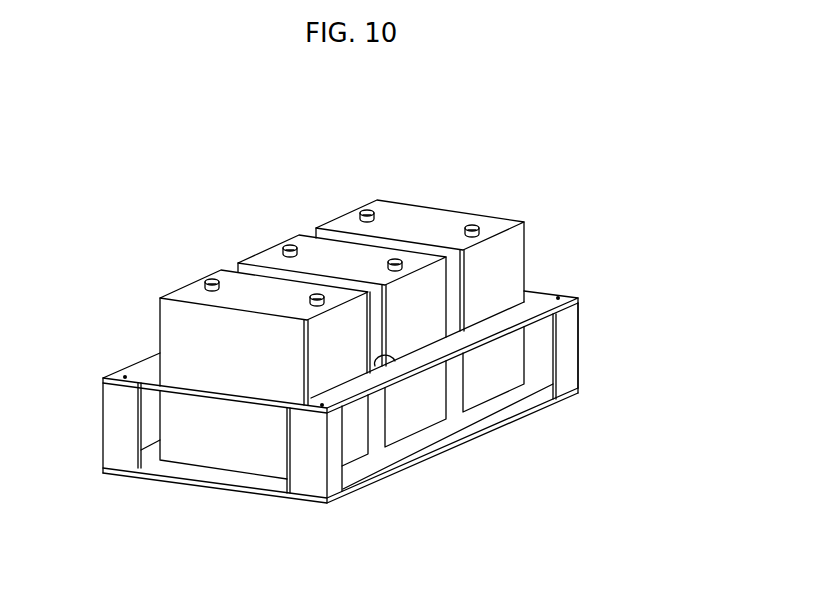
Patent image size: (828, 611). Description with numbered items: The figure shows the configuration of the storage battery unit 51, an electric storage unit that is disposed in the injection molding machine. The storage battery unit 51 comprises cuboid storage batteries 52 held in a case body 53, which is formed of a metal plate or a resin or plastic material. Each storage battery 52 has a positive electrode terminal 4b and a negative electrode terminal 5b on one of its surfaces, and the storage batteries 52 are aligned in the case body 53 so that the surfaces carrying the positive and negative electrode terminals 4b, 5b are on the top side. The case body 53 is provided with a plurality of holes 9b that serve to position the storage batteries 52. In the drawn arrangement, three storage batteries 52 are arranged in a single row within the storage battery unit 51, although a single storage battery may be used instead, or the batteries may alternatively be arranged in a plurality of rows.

The storage battery unit 51 is at (427, 468).
The storage battery 52 is at (457, 283).
The case body 53 is at (567, 356).
The negative electrode terminal 5b is at (368, 209).
The positive electrode terminal 4b is at (471, 224).
The hole 9b is at (388, 360).